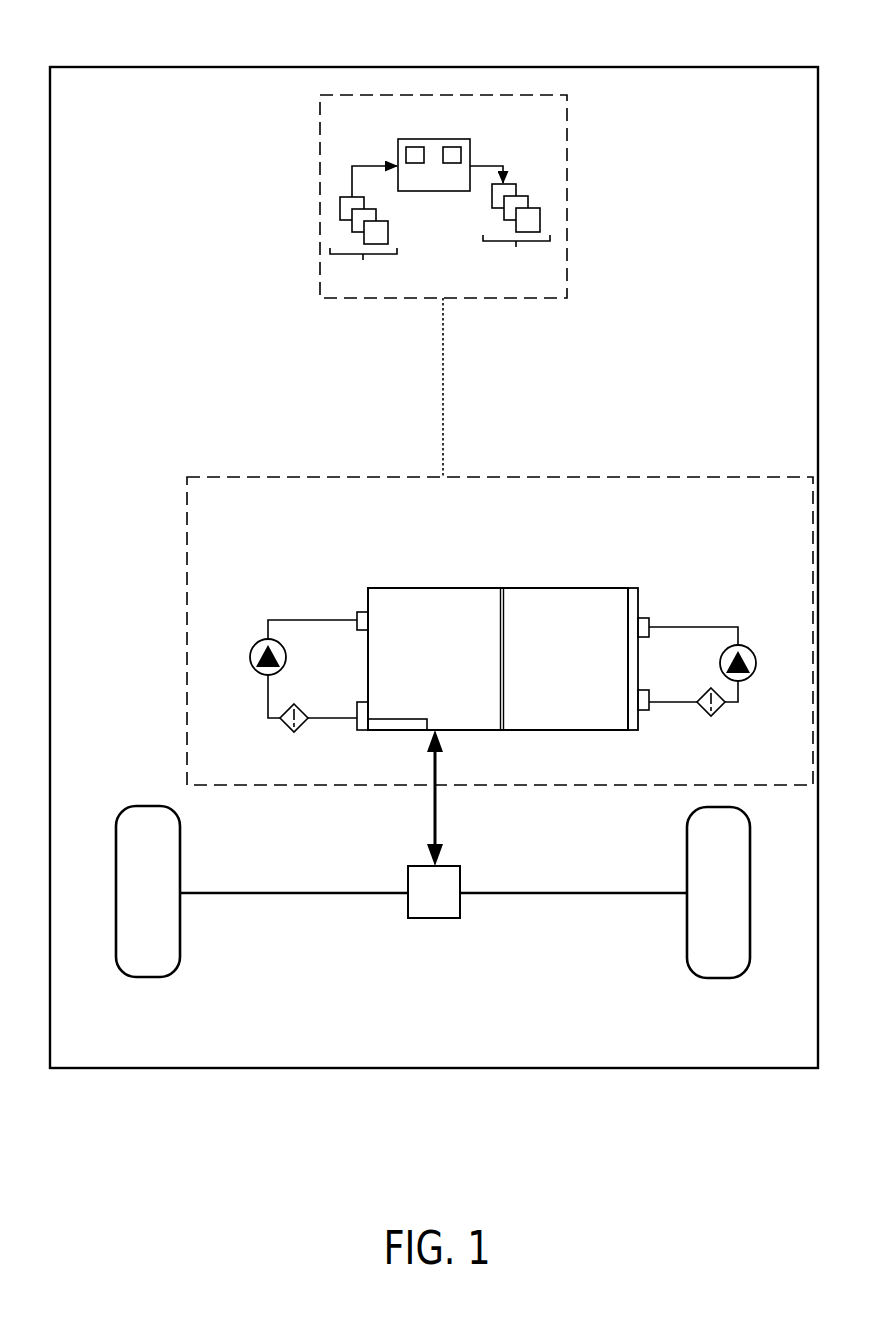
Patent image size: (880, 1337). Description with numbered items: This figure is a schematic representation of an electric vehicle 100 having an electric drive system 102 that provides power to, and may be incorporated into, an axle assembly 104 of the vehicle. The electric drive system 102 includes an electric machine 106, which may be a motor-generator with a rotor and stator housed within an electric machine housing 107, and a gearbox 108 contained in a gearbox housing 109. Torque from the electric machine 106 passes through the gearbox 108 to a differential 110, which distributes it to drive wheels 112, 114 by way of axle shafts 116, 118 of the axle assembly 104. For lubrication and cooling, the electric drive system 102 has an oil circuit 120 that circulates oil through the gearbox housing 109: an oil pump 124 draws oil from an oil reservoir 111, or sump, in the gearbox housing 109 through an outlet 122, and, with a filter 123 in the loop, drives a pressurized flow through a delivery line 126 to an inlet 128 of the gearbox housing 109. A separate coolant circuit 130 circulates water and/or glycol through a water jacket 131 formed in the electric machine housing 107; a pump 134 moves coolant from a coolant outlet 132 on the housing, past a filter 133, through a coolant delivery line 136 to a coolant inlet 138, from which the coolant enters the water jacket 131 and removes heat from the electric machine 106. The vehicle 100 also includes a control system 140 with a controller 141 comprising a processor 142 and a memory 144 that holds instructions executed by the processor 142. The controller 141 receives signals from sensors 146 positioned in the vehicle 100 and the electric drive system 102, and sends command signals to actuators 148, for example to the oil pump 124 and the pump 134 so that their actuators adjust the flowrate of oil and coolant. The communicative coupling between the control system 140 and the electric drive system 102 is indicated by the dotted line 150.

The electric vehicle 100 is at (160, 67).
The electric drive system 102 is at (335, 477).
The axle assembly 104 is at (367, 936).
The electric machine 106 is at (566, 659).
The electric machine housing 107 is at (580, 588).
The gearbox 108 is at (434, 659).
The gearbox housing 109 is at (393, 588).
The differential 110 is at (445, 862).
The oil reservoir 111 is at (397, 730).
The drive wheel 112 is at (147, 978).
The drive wheel 114 is at (718, 978).
The axle shaft 116 is at (283, 893).
The axle shaft 118 is at (578, 893).
The oil circuit 120 is at (291, 550).
The outlet 122 is at (360, 732).
The filter 123 is at (285, 728).
The oil pump 124 is at (251, 655).
The delivery line 126 is at (290, 620).
The inlet 128 is at (357, 614).
The coolant circuit 130 is at (722, 553).
The water jacket 131 is at (632, 596).
The coolant outlet 132 is at (652, 710).
The filter 133 is at (720, 711).
The pump 134 is at (754, 675).
The coolant delivery line 136 is at (712, 627).
The coolant inlet 138 is at (648, 638).
The control system 140 is at (318, 138).
The controller 141 is at (422, 139).
The processor 142 is at (406, 156).
The memory 144 is at (461, 156).
The sensors 146 is at (363, 229).
The actuators 148 is at (510, 221).
The dotted line 150 is at (443, 385).